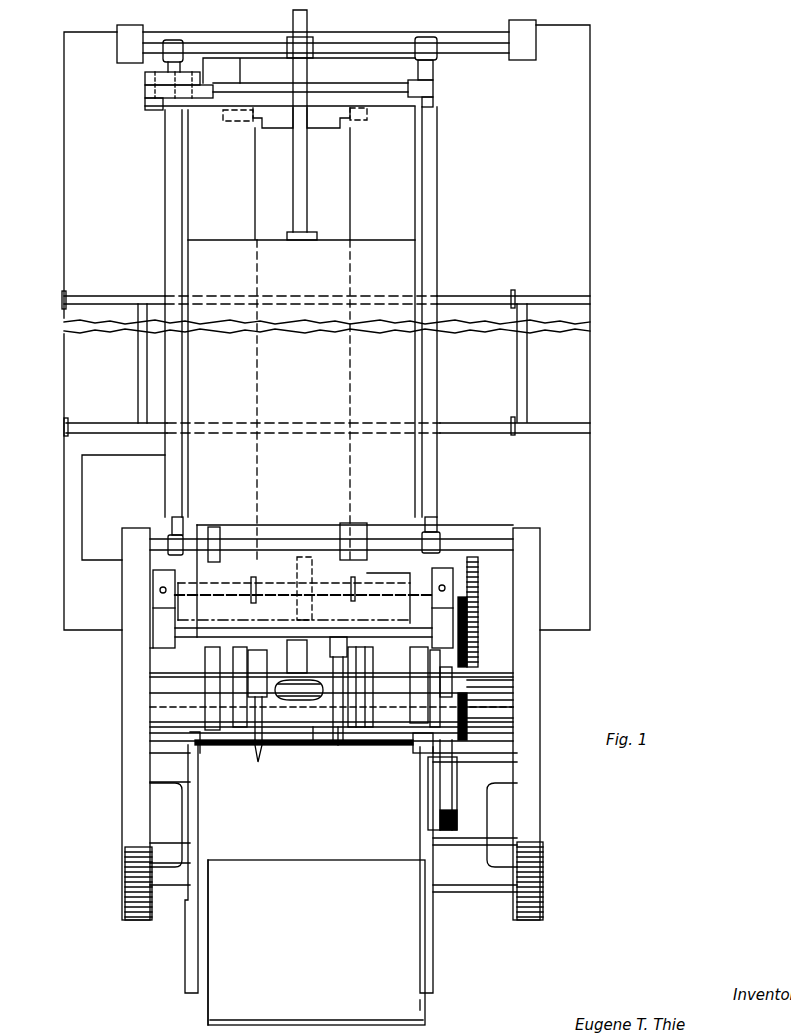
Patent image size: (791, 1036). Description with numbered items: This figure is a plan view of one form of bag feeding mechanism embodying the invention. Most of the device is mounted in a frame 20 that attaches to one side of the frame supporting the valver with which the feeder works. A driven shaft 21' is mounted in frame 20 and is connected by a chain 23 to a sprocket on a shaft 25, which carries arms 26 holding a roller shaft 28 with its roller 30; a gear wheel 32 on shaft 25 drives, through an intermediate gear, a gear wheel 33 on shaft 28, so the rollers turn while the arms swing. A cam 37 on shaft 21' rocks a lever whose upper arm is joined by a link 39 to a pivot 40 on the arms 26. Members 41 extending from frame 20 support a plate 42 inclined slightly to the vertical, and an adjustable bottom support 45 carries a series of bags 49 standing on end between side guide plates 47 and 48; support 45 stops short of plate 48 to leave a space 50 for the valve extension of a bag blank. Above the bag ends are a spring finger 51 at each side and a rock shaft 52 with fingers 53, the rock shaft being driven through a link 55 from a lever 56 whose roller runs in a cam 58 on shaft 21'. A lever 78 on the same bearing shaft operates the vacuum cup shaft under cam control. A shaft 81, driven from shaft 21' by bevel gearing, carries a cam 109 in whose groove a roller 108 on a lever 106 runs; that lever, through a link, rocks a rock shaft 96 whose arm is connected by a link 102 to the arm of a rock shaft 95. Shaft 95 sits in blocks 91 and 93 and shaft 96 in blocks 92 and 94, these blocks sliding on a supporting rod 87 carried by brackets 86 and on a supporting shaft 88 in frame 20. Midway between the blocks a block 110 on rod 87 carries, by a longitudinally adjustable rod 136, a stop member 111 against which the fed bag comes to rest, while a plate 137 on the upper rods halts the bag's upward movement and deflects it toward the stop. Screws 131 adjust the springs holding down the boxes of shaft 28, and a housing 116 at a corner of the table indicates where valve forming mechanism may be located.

The frame 20 is at (533, 652).
The shaft 21' is at (518, 699).
The chain 23 is at (470, 664).
The shaft 25 is at (188, 623).
The arms 26 is at (160, 637).
The shaft 28 is at (280, 585).
The roller 30 is at (312, 570).
The gear wheel 32 is at (470, 645).
The gear wheel 33 is at (478, 572).
The cam 37 is at (373, 666).
The link 39 is at (334, 664).
The pivot 40 is at (189, 638).
The members 41 is at (152, 883).
The plate 42 is at (178, 815).
The adjustable bottom support 45 is at (415, 1005).
The side guide plate 47 is at (427, 921).
The side guide plate 48 is at (190, 944).
The bags 49 is at (320, 840).
The space 50 is at (203, 902).
The spring finger 51 is at (200, 751).
The rock shaft 52 is at (317, 736).
The fingers 53 is at (257, 741).
The link 55 is at (448, 776).
The lever 56 is at (436, 822).
The cam 58 is at (417, 652).
The lever 78 is at (253, 662).
The shaft 81 is at (290, 194).
The brackets 86 is at (132, 57).
The supporting rod 87 is at (467, 52).
The supporting shaft 88 is at (481, 537).
The block 91 is at (434, 64).
The block 92 is at (163, 60).
The block 93 is at (438, 537).
The block 94 is at (172, 537).
The rock shaft 95 is at (419, 99).
The rock shaft 96 is at (172, 108).
The link 102 is at (410, 86).
The lever 106 is at (213, 95).
The roller 108 is at (265, 127).
The cam 109 is at (320, 126).
The block 110 is at (315, 53).
The stop member 111 is at (310, 233).
The housing 116 is at (87, 465).
The screws 131 is at (167, 590).
The rod 136 is at (307, 168).
The plate 137 is at (362, 557).